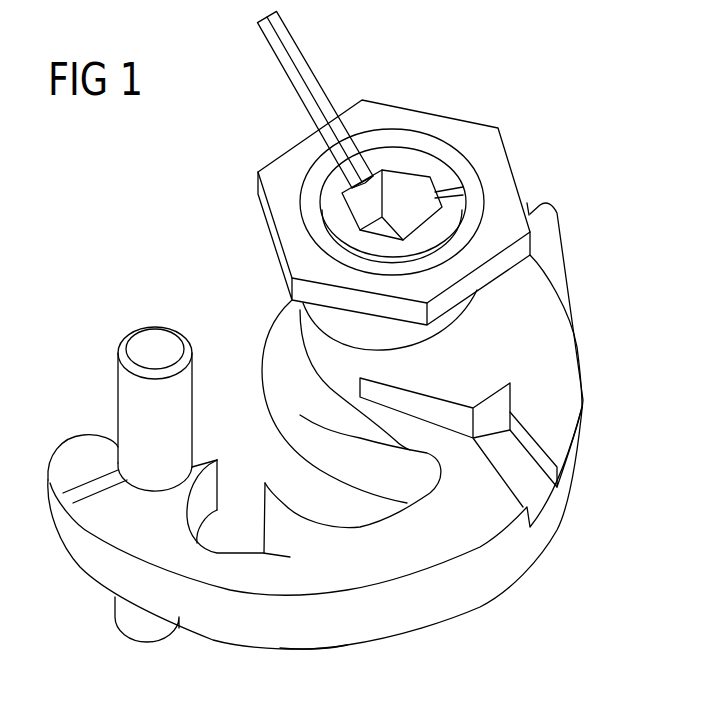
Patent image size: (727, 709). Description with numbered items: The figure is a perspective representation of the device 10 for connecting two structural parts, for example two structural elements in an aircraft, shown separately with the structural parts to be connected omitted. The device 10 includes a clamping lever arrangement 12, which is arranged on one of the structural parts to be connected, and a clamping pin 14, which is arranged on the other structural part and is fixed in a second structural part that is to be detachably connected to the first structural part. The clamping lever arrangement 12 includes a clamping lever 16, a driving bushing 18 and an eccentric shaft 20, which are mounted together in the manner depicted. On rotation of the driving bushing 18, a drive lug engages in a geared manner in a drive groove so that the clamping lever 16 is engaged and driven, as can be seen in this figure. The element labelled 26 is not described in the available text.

The device 10 is at (538, 166).
The clamping lever arrangement 12 is at (566, 538).
The clamping pin 14 is at (122, 332).
The clamping lever 16 is at (453, 598).
The driving bushing 18 is at (495, 165).
The eccentric shaft 20 is at (410, 160).
The tool 26 is at (283, 72).